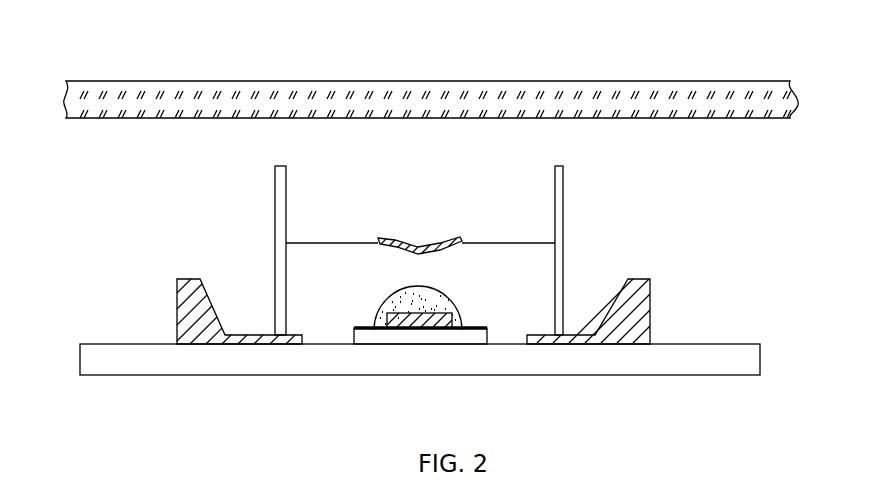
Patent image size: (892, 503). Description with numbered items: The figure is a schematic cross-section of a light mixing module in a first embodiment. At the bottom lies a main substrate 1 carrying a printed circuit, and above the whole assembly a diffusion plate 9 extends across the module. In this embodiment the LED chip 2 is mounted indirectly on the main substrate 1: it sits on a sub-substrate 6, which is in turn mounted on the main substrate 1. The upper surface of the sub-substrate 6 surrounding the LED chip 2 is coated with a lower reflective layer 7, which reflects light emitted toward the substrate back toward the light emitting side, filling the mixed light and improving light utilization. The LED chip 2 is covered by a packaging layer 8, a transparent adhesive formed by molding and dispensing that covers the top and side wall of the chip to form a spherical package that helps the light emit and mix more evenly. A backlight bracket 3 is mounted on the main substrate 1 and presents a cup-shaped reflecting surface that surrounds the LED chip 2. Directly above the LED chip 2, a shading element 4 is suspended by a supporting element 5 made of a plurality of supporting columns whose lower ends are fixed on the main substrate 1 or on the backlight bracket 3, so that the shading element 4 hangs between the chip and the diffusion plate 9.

The main substrate 1 is at (188, 366).
The LED chip 2 is at (432, 323).
The backlight bracket 3 is at (615, 337).
The shading element 4 is at (402, 242).
The supporting element 5 is at (563, 166).
The sub-substrate 6 is at (402, 340).
The lower reflective layer 7 is at (477, 329).
The packaging layer 8 is at (390, 320).
The diffusion plate 9 is at (138, 96).